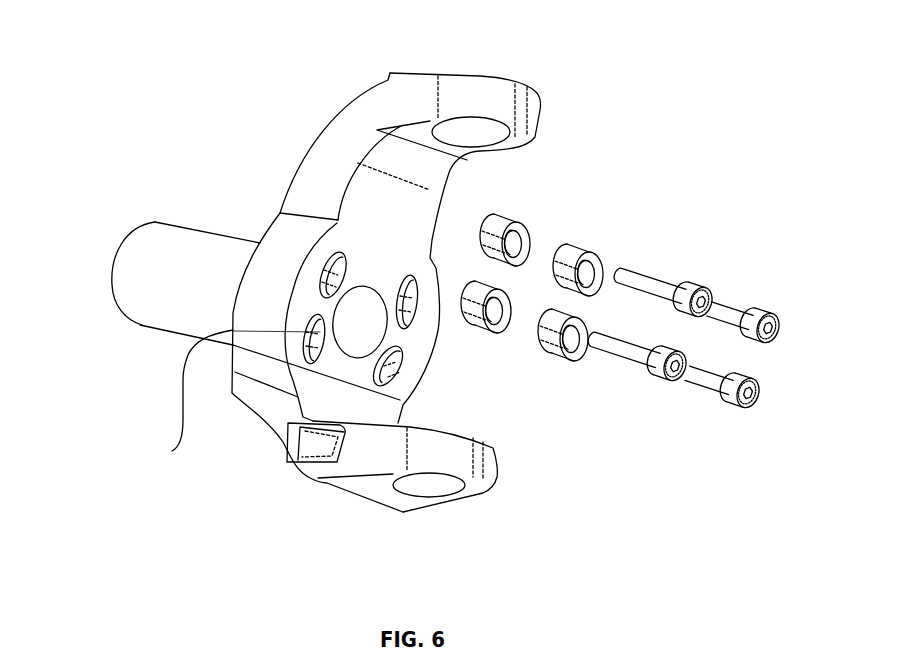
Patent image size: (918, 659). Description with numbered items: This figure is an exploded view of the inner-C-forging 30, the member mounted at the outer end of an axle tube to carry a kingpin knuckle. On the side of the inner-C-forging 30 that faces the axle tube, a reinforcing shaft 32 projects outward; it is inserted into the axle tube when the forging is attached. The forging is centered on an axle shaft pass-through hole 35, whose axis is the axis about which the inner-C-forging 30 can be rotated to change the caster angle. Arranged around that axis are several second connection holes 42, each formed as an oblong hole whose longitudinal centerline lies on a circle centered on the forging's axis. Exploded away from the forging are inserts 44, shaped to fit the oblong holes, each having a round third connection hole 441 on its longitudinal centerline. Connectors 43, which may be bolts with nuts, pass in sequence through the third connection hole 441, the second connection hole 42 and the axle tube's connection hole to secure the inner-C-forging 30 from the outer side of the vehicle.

The inner-C-forging 30 is at (262, 263).
The reinforcing shaft 32 is at (160, 262).
The axle shaft pass-through hole 35 is at (361, 332).
The second connection hole 42 is at (172, 451).
The connector 43 is at (663, 298).
The insert 44 is at (517, 220).
The third connection hole 441 is at (567, 343).